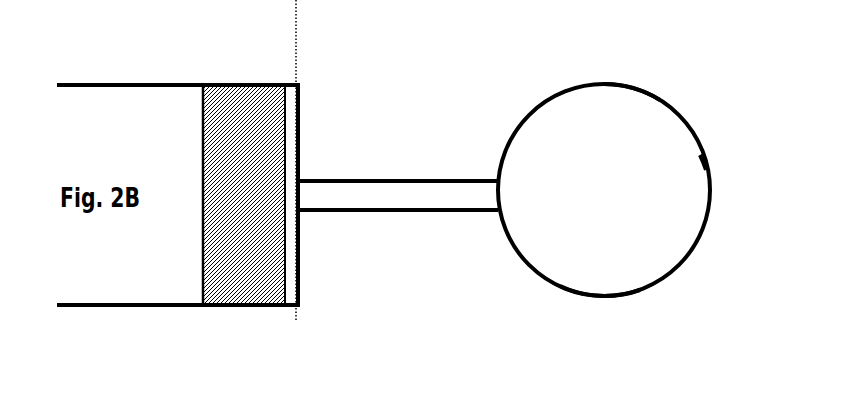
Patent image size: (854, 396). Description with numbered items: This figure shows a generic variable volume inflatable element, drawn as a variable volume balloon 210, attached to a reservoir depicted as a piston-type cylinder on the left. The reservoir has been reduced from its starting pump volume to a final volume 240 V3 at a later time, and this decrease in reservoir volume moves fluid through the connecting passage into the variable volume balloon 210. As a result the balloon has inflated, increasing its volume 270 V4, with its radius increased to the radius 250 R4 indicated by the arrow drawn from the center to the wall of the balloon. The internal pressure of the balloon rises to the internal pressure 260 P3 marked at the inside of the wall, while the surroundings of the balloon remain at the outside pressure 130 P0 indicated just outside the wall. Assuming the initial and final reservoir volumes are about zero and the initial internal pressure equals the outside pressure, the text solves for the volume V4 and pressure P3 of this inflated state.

The final volume 240 is at (303, 155).
The outside pressure 130 is at (635, 80).
The radius 250 is at (598, 197).
The internal pressure 260 is at (697, 158).
The volume 270 is at (600, 264).
The variable volume balloon 210 is at (600, 295).